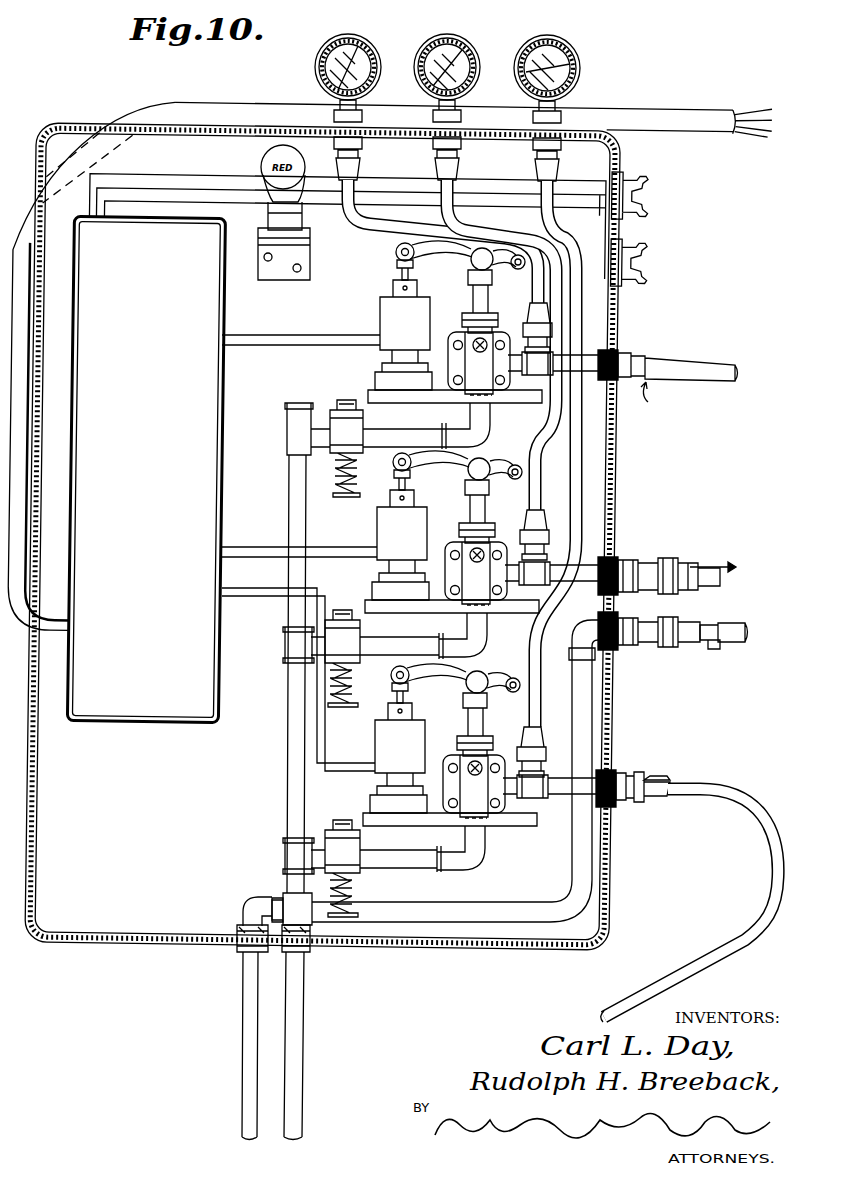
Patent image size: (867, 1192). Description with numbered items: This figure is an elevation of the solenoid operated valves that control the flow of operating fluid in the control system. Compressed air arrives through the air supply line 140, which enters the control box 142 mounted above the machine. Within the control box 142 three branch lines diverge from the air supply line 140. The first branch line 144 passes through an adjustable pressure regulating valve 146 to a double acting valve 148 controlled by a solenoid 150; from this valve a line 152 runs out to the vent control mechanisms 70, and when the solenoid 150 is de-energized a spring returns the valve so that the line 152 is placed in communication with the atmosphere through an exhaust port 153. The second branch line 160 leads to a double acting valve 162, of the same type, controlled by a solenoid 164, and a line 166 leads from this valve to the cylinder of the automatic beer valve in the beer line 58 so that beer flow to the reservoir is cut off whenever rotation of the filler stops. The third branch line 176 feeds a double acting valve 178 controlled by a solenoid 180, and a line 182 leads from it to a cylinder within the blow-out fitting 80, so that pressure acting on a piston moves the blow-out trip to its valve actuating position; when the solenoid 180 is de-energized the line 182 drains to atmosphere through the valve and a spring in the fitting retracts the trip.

The control box 142 is at (356, 537).
The air supply line 140 is at (320, 771).
The beer line 58 is at (481, 881).
The solenoid 180 is at (384, 335).
The double acting valve 178 is at (484, 345).
The branch line 176 is at (419, 448).
The line 182 is at (668, 357).
The blow-out fitting 80 is at (713, 416).
The solenoid 150 is at (378, 545).
The double acting valve 148 is at (482, 555).
The exhaust port 153 is at (501, 601).
The branch line 144 is at (361, 640).
The adjustable pressure regulating valve 146 is at (296, 683).
The line 152 is at (672, 584).
The vent control mechanisms 70 is at (715, 560).
The solenoid 164 is at (414, 755).
The double acting valve 162 is at (562, 780).
The branch line 160 is at (361, 868).
The line 166 is at (687, 888).